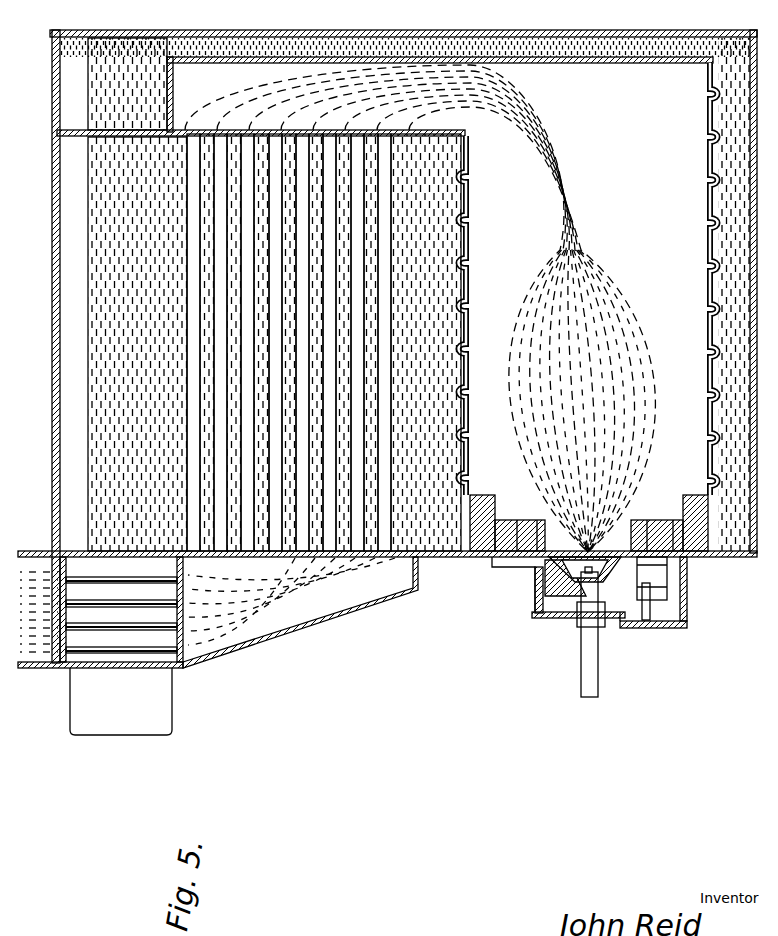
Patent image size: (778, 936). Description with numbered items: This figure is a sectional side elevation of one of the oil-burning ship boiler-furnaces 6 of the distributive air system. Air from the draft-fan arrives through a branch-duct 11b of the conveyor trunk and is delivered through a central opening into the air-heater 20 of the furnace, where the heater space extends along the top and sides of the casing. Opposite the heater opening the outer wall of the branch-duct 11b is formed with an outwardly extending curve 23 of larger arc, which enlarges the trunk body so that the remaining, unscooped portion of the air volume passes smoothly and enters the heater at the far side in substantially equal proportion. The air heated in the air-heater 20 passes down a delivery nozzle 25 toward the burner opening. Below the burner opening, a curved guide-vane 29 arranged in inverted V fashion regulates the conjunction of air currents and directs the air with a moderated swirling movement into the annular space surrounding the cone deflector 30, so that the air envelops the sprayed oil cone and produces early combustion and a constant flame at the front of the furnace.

The boiler-furnace 6 is at (56, 304).
The air-heater 20 is at (88, 590).
The branch-duct 11b is at (180, 675).
The outwardly extending curve 23 is at (125, 728).
The delivery nozzle 25 is at (323, 617).
The curved guide-vane 29 is at (657, 622).
The cone deflector 30 is at (605, 562).